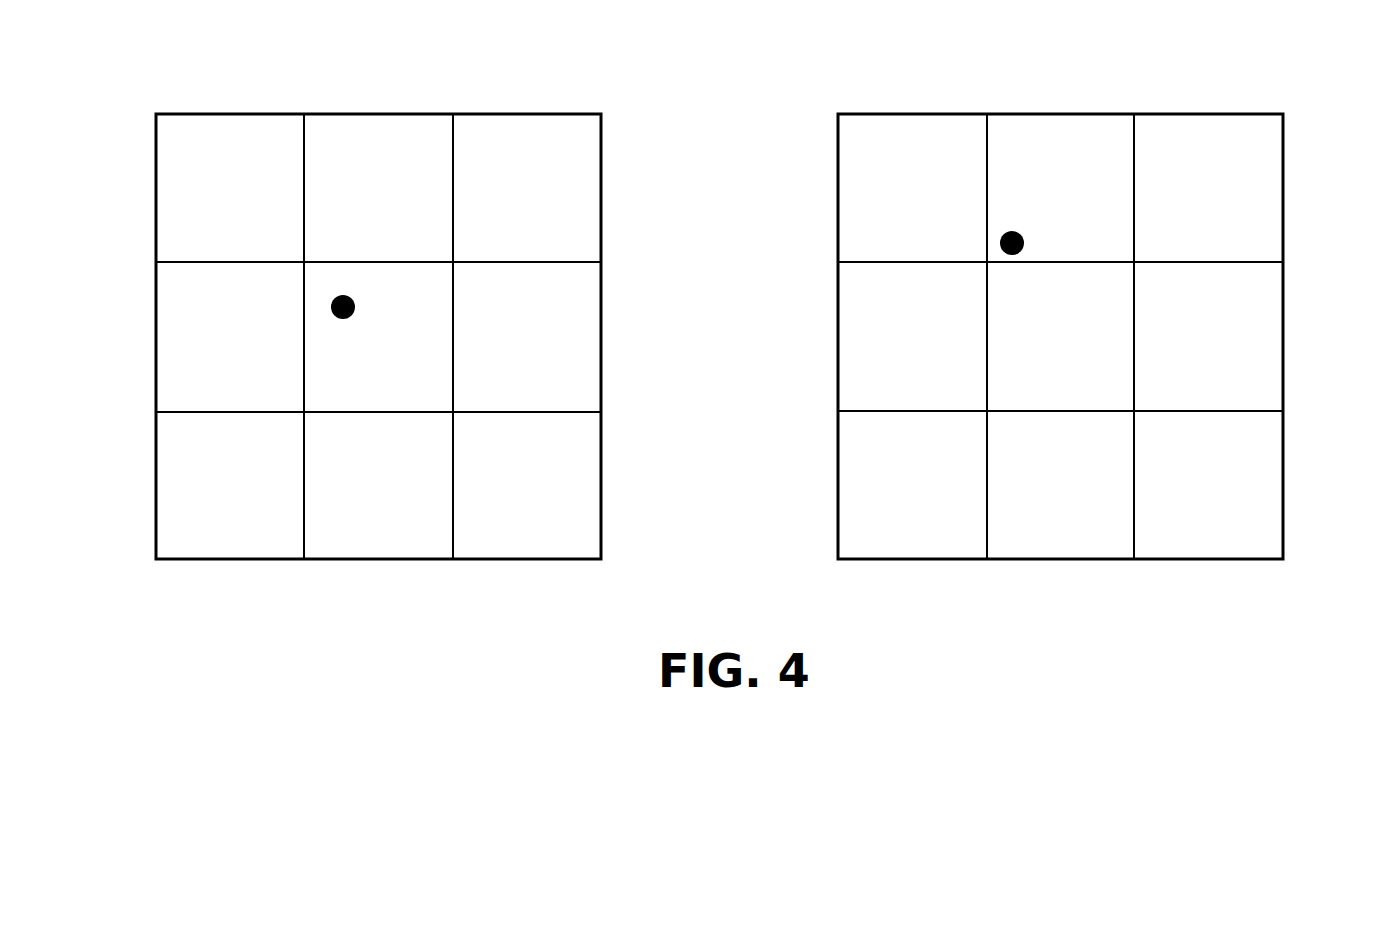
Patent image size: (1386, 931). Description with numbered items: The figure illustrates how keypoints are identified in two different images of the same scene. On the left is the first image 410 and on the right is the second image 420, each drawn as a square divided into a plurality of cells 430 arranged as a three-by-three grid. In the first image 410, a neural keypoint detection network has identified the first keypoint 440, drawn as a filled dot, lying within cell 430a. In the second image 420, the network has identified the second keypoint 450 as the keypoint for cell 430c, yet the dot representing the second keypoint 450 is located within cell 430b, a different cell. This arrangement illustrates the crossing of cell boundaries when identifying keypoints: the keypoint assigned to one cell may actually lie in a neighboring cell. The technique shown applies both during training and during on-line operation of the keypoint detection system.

The first image 410 is at (387, 113).
The second image 420 is at (1081, 113).
The cells 430 is at (546, 179).
The cell 430a is at (352, 357).
The cell 430b is at (1025, 168).
The cell 430c is at (1073, 338).
The first keypoint 440 is at (355, 309).
The second keypoint 450 is at (1020, 238).